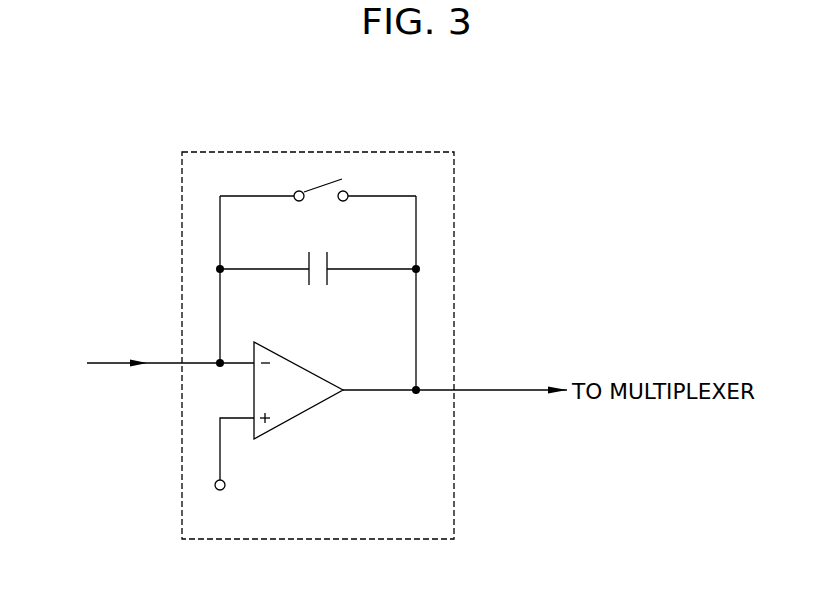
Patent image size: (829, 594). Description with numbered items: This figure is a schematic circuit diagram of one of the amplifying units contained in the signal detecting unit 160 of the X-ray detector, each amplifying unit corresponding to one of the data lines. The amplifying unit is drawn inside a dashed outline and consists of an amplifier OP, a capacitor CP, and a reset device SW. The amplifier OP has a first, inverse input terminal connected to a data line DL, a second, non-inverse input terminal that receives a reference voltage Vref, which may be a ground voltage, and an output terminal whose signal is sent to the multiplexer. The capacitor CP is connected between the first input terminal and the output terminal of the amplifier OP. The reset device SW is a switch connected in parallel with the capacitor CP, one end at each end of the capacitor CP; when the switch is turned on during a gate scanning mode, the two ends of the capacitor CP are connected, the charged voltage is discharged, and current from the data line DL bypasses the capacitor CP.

The signal detecting unit 160 is at (424, 316).
The data line DL is at (154, 363).
The reset device SW is at (321, 205).
The capacitor CP is at (320, 282).
The amplifier OP is at (298, 390).
The reference voltage Vref is at (228, 472).